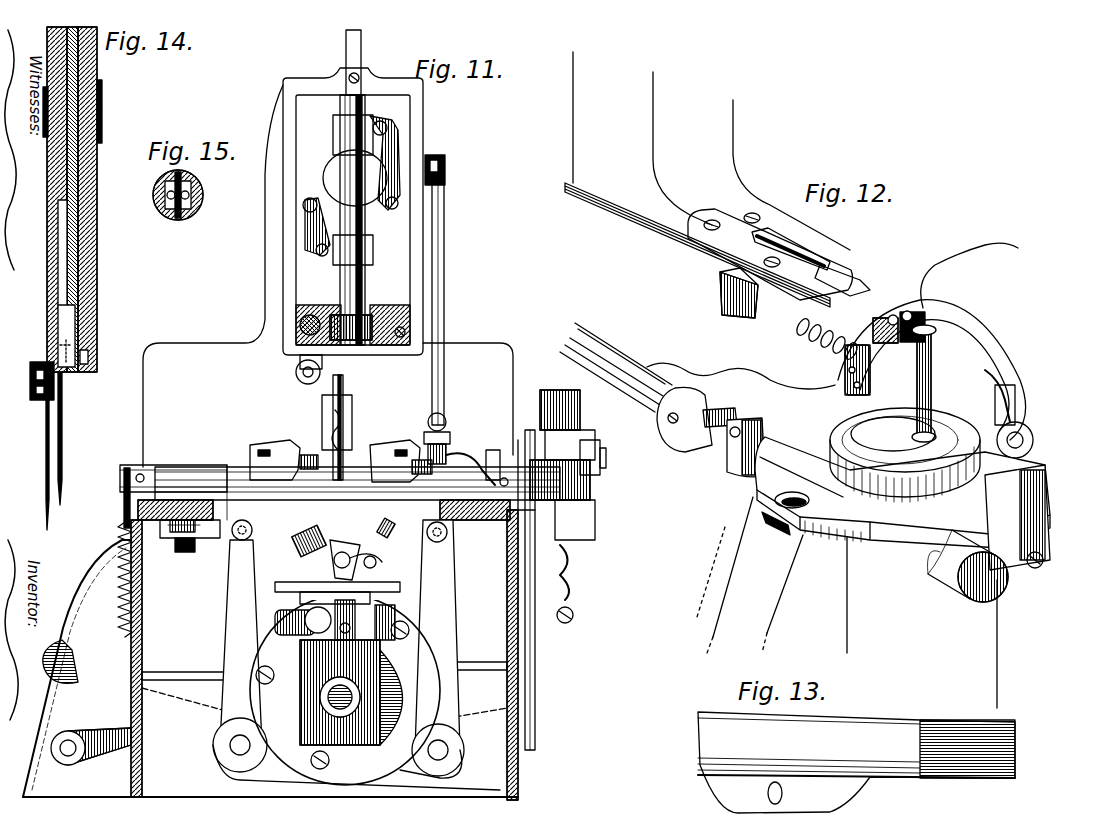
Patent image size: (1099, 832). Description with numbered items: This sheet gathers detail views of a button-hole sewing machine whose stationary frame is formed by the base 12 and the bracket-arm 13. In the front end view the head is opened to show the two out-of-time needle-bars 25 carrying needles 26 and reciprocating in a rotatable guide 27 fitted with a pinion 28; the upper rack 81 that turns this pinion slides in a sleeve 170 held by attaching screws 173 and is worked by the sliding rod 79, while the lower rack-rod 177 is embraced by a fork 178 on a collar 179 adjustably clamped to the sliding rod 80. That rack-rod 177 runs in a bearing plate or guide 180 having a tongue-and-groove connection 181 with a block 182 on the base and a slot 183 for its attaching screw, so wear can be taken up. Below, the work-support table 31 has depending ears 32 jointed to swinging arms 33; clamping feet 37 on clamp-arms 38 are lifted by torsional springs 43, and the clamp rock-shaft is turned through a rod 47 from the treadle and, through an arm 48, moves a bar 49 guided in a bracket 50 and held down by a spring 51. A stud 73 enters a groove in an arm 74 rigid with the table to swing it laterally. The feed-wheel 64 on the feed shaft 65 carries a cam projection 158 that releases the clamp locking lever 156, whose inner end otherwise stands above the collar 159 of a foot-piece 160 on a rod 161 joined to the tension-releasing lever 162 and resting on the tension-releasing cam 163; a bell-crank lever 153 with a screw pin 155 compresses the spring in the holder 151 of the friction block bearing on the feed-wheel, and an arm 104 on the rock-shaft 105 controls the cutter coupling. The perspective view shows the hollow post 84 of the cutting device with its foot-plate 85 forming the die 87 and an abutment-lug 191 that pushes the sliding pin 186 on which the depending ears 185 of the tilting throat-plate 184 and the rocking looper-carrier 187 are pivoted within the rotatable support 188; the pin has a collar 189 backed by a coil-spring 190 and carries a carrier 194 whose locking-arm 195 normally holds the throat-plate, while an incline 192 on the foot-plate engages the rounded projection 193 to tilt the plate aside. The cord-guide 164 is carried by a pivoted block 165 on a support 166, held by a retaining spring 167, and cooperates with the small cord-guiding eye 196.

In FIG. 11, the base 12 is at (131, 672).
In FIG. 11, the bracket-arm 13 is at (265, 262).
In FIG. 14, the needle-bars 25 is at (88, 318).
In FIG. 15, the needle-bars 25 is at (205, 200).
In FIG. 14, the needles 26 is at (62, 468).
In FIG. 11, the needles 26 is at (335, 440).
In FIG. 14, the rotatable guide 27 is at (74, 259).
In FIG. 15, the rotatable guide 27 is at (178, 209).
In FIG. 11, the rotatable guide 27 is at (366, 290).
In FIG. 11, the pinion 28 is at (340, 315).
In FIG. 11, the plate or table 31 is at (398, 533).
In FIG. 11, the depending ears 32 is at (450, 535).
In FIG. 11, the swinging arms 33 is at (452, 600).
In FIG. 11, the clamping feet 37 is at (370, 540).
In FIG. 11, the clamp-arms 38 is at (341, 461).
In FIG. 11, the torsional springs 43 is at (230, 466).
In FIG. 11, the rod 47 is at (537, 692).
In FIG. 11, the arm 48 is at (120, 490).
In FIG. 11, the bar 49 is at (124, 508).
In FIG. 11, the steadying and guiding bracket 50 is at (118, 530).
In FIG. 11, the spring 51 is at (118, 603).
In FIG. 11, the feed-wheel 64 is at (556, 392).
In FIG. 11, the feed shaft 65 is at (606, 500).
In FIG. 11, the pin or stud 73 is at (188, 555).
In FIG. 11, the arm 74 is at (198, 540).
In FIG. 11, the sliding rod 79 is at (300, 378).
In FIG. 12, the sliding rod 80 is at (650, 405).
In FIG. 11, the upper rack 81 is at (292, 342).
In FIG. 12, the hollow post or standard 84 is at (711, 151).
In FIG. 12, the foot-plate 85 is at (690, 240).
In FIG. 12, the throat or die 87 is at (800, 240).
In FIG. 11, the arm 104 is at (98, 735).
In FIG. 11, the rock-shaft 105 is at (75, 758).
In FIG. 11, the holder 151 is at (596, 589).
In FIG. 11, the bell-crank lever 153 is at (596, 468).
In FIG. 11, the screw pin 155 is at (574, 617).
In FIG. 11, the clamp locking lever 156 is at (478, 455).
In FIG. 11, the cam or projection 158 is at (598, 512).
In FIG. 11, the collar 159 is at (446, 424).
In FIG. 11, the foot-piece 160 is at (452, 438).
In FIG. 11, the rod 161 is at (446, 292).
In FIG. 11, the tension-releasing lever 162 is at (446, 168).
In FIG. 11, the tension-releasing cam 163 is at (489, 476).
In FIG. 11, the cord-guide 164 is at (292, 586).
In FIG. 12, the cord-guide 164 is at (835, 428).
In FIG. 11, the block 165 is at (302, 596).
In FIG. 12, the block 165 is at (1017, 517).
In FIG. 11, the support 166 is at (351, 692).
In FIG. 12, the support 166 is at (1005, 585).
In FIG. 11, the retaining spring 167 is at (342, 607).
In FIG. 12, the retaining spring 167 is at (1046, 540).
In FIG. 11, the sleeve 170 is at (262, 340).
In FIG. 11, the attaching screws 173 is at (402, 338).
In FIG. 12, the rack-rod 177 is at (738, 474).
In FIG. 12, the fork 178 is at (760, 420).
In FIG. 12, the collar 179 is at (672, 438).
In FIG. 12, the bearing plate or guide 180 is at (902, 495).
In FIG. 13, the bearing plate or guide 180 is at (856, 762).
In FIG. 12, the tongue-and-groove connection 181 is at (776, 530).
In FIG. 11, the support or block 182 is at (345, 690).
In FIG. 12, the support or block 182 is at (765, 575).
In FIG. 13, the slot or hole 183 is at (783, 790).
In FIG. 12, the tilting needle throat-plate 184 is at (960, 318).
In FIG. 12, the depending ears 185 is at (935, 438).
In FIG. 12, the sliding pin 186 is at (1027, 438).
In FIG. 11, the rocking looper-carrier 187 is at (386, 555).
In FIG. 11, the rotatable support 188 is at (298, 622).
In FIG. 12, the rotatable support 188 is at (905, 465).
In FIG. 12, the head or collar 189 is at (800, 325).
In FIG. 12, the coil-spring 190 is at (822, 340).
In FIG. 12, the abutment-lug 191 is at (738, 312).
In FIG. 12, the incline 192 is at (845, 280).
In FIG. 12, the rounded projection 193 is at (908, 310).
In FIG. 12, the carrier 194 is at (1016, 392).
In FIG. 12, the locking-arm 195 is at (1000, 362).
In FIG. 12, the cord-guiding eye 196 is at (885, 317).